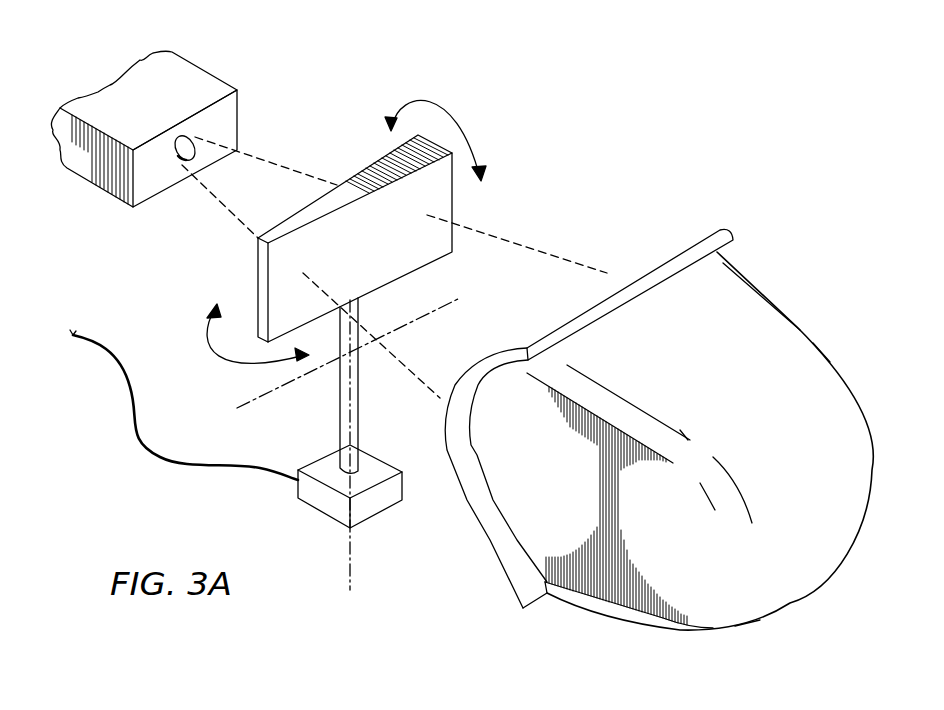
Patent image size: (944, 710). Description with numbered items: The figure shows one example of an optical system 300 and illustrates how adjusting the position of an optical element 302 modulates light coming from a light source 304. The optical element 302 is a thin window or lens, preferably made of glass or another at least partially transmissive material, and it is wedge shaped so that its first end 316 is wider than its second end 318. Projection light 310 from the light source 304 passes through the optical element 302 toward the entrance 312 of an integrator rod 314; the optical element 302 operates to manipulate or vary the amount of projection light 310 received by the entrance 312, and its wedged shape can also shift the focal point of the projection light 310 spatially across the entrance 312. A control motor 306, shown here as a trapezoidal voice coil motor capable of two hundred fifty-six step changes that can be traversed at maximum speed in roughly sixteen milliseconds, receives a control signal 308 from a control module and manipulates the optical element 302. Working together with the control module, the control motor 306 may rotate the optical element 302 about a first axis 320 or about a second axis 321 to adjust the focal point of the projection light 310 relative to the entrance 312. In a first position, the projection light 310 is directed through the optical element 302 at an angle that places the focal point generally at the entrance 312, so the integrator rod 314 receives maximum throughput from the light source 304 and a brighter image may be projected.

The optical system 300 is at (589, 138).
The optical element 302 is at (382, 258).
The light source 304 is at (723, 372).
The control motor 306 is at (377, 515).
The control signal 308 is at (160, 460).
The projection light 310 is at (545, 257).
The entrance 312 is at (195, 150).
The integrator rod 314 is at (204, 70).
The first end 316 is at (455, 198).
The second end 318 is at (257, 285).
The first axis 320 is at (350, 560).
The second axis 321 is at (251, 401).